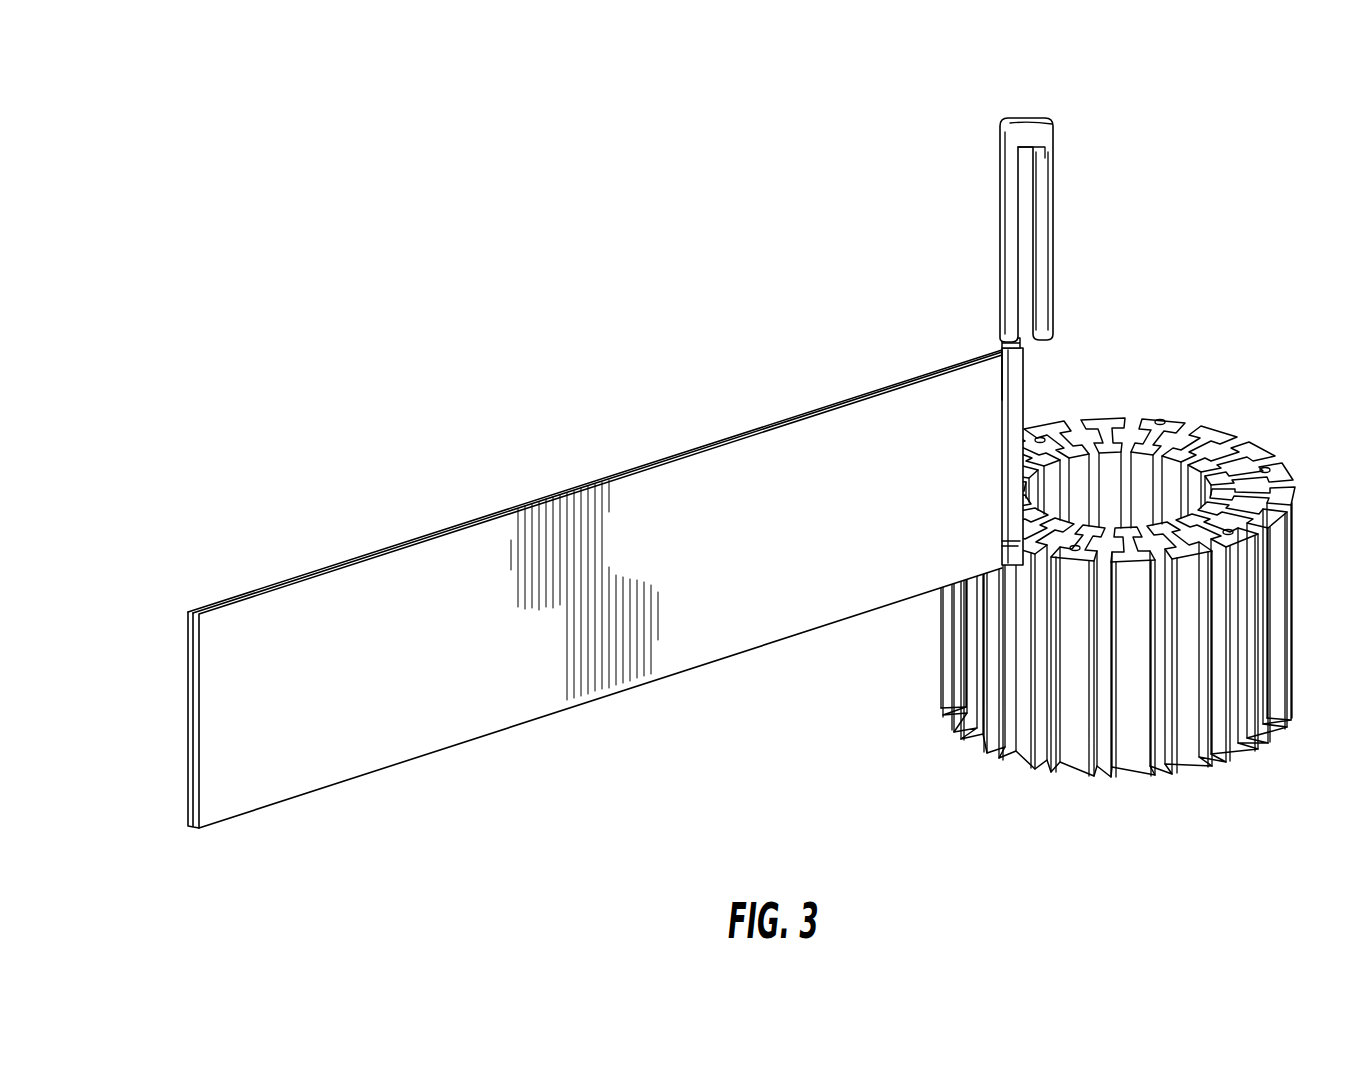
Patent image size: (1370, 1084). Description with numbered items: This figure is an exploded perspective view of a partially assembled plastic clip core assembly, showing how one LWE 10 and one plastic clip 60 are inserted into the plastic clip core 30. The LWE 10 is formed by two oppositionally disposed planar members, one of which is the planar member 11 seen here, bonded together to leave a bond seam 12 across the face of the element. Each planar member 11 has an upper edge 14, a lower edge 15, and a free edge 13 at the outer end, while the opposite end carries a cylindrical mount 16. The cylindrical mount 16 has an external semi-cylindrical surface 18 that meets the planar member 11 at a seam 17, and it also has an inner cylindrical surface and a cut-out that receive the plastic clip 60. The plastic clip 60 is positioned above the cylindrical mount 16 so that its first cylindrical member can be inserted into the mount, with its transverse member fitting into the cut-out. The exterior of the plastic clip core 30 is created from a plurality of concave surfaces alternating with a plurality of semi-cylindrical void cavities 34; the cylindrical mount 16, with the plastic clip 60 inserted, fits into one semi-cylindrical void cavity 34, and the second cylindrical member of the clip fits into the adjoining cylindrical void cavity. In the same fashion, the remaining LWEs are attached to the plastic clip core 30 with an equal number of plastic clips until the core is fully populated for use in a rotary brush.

The LWE 10 is at (571, 599).
The planar member 11 is at (288, 760).
The bond seam 12 is at (612, 473).
The free edge 13 is at (188, 660).
The upper edge 14 is at (308, 573).
The lower edge 15 is at (620, 690).
The cylindrical mount 16 is at (1000, 336).
The seam 17 is at (1018, 405).
The external semi-cylindrical surface 18 is at (1002, 378).
The plastic clip core 30 is at (1160, 392).
The semi-cylindrical void cavity 34 is at (1018, 541).
The plastic clip 60 is at (1055, 120).